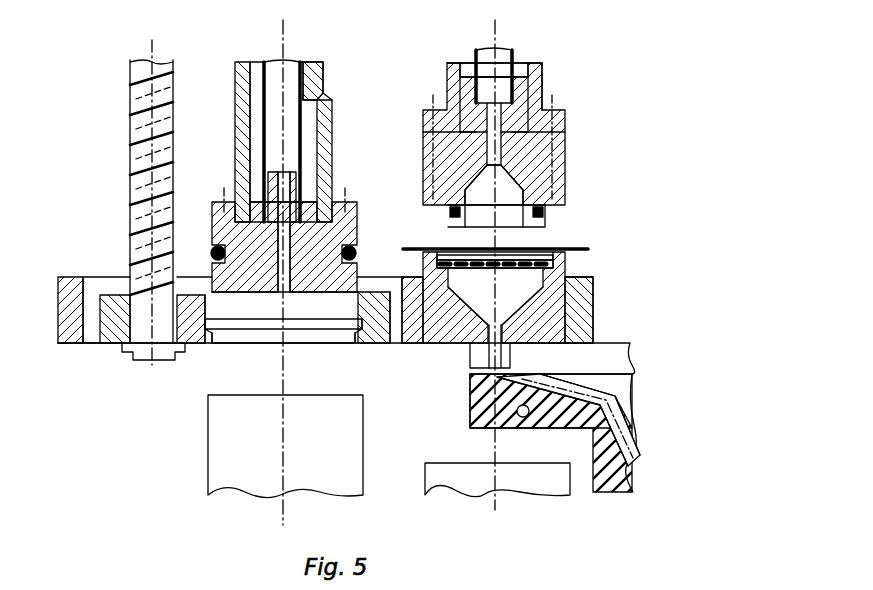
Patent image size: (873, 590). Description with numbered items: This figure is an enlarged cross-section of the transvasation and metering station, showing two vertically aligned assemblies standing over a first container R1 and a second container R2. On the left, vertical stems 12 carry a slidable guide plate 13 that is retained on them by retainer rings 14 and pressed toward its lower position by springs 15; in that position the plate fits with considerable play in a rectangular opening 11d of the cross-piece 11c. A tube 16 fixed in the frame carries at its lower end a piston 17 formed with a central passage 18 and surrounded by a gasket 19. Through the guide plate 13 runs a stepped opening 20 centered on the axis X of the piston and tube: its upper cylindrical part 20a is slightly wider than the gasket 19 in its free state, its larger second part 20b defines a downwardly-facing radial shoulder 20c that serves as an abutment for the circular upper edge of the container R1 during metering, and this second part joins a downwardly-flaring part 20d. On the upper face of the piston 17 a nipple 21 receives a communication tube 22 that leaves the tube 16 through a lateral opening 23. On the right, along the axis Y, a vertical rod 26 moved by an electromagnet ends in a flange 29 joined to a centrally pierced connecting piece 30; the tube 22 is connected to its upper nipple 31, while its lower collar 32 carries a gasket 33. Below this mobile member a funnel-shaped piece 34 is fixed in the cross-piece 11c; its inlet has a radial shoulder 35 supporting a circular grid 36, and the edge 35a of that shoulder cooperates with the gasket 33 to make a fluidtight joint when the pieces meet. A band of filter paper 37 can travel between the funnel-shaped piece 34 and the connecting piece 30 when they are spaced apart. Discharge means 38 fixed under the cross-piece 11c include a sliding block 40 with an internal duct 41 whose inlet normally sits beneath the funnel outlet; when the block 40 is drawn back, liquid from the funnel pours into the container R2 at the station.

The cross-piece 11c is at (600, 338).
The rectangular opening 11d is at (90, 280).
The vertical stem 12 is at (135, 72).
The guide plate 13 is at (405, 345).
The retainer ring 14 is at (123, 348).
The spring 15 is at (150, 128).
The tube 16 is at (240, 162).
The piston 17 is at (353, 248).
The central passage 18 is at (290, 300).
The gasket 19 is at (213, 250).
The stepped opening 20 is at (250, 342).
The upper cylindrical part 20a is at (225, 345).
The second part 20b is at (212, 345).
The radial shoulder 20c is at (361, 345).
The downwardly-flaring part 20d is at (405, 345).
The nipple 21 is at (300, 175).
The communication tube 22 is at (281, 62).
The lateral opening 23 is at (320, 80).
The vertical rod 26 is at (543, 95).
The flange 29 is at (547, 125).
The connecting piece 30 is at (560, 170).
The upper nipple 31 is at (447, 102).
The lower collar 32 is at (536, 223).
The gasket 33 is at (548, 212).
The funnel-shaped piece 34 is at (575, 298).
The radial shoulder 35 is at (445, 247).
The edge 35a is at (556, 263).
The circular grid 36 is at (598, 320).
The band of filter paper 37 is at (600, 248).
The discharge means 38 is at (640, 412).
The sliding block 40 is at (605, 475).
The internal duct 41 is at (632, 435).
The first container R1 is at (208, 464).
The second container R2 is at (425, 480).
The axis X— X is at (280, 28).
The axis Y— Y is at (493, 28).